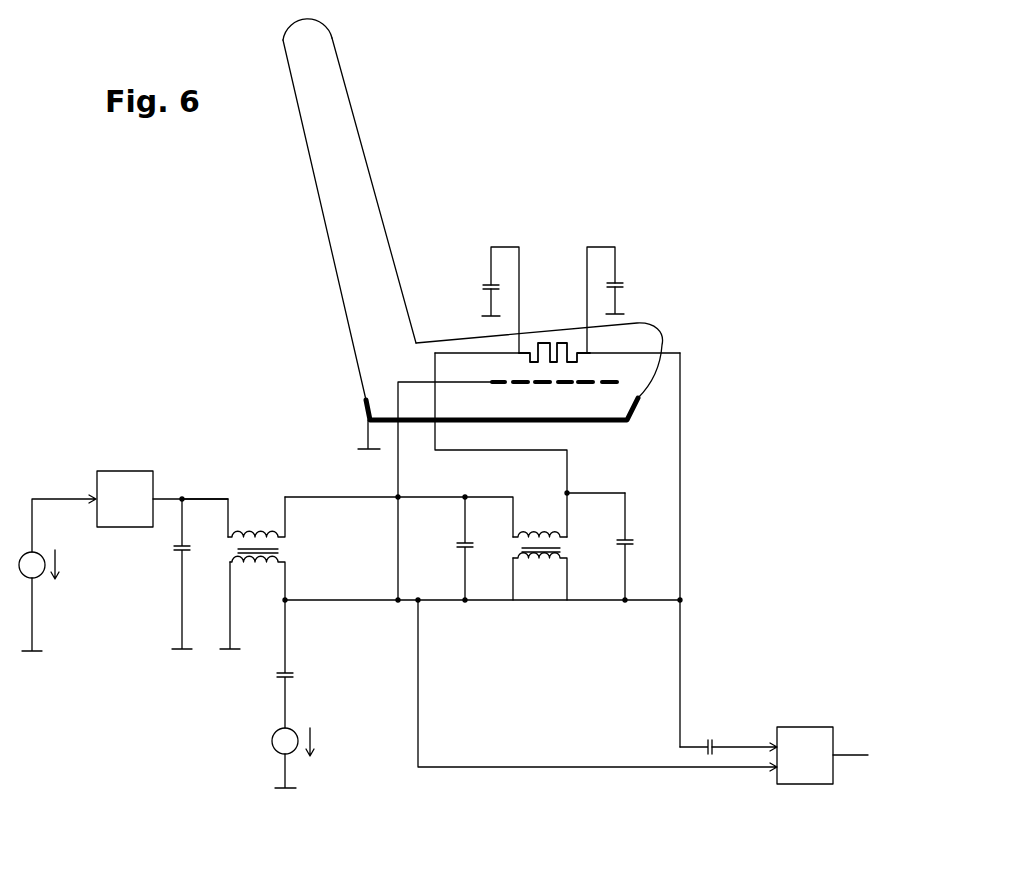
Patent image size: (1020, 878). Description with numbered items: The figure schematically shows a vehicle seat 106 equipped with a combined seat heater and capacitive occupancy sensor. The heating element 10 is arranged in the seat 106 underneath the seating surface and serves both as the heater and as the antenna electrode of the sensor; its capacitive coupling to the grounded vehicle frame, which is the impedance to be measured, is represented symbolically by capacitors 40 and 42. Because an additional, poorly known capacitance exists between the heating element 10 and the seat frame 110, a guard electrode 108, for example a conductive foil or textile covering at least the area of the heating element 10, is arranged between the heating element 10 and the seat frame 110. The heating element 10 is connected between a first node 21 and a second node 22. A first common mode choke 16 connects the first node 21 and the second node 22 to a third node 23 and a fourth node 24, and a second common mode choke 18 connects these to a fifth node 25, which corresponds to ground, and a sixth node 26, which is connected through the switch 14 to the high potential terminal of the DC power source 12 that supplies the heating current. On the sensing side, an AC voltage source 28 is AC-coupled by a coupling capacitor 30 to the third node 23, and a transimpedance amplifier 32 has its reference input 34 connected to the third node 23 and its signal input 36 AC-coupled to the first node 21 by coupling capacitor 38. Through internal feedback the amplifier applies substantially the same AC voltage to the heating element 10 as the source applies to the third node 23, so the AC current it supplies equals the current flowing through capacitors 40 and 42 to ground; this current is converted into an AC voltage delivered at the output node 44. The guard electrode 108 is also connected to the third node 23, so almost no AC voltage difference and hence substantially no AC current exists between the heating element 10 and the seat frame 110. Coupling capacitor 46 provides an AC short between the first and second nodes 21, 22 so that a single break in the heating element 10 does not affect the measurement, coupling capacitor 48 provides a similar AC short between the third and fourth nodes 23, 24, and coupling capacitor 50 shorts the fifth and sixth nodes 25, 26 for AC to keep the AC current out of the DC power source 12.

The heating element 10 is at (553, 340).
The vehicle seat 106 is at (330, 243).
The guard electrode 108 is at (527, 384).
The seat frame 110 is at (360, 407).
The capacitor 42 is at (490, 285).
The capacitor 40 is at (618, 284).
The power source 12 is at (37, 578).
The switch 14 is at (110, 530).
The coupling capacitor 50 is at (178, 549).
The sixth node 26 is at (201, 503).
The fifth node 25 is at (228, 619).
The second common mode choke 18 is at (252, 568).
The fourth node 24 is at (344, 500).
The coupling capacitor 48 is at (455, 548).
The first common mode choke 16 is at (533, 560).
The second node 22 is at (588, 491).
The first node 21 is at (680, 470).
The coupling capacitor 46 is at (640, 548).
The third node 23 is at (435, 602).
The coupling capacitor 30 is at (306, 656).
The AC voltage source 28 is at (295, 731).
The reference input 34 is at (670, 765).
The coupling capacitor 38 is at (712, 732).
The signal input 36 is at (752, 746).
The transimpedance amplifier 32 is at (805, 727).
The output node 44 is at (855, 752).